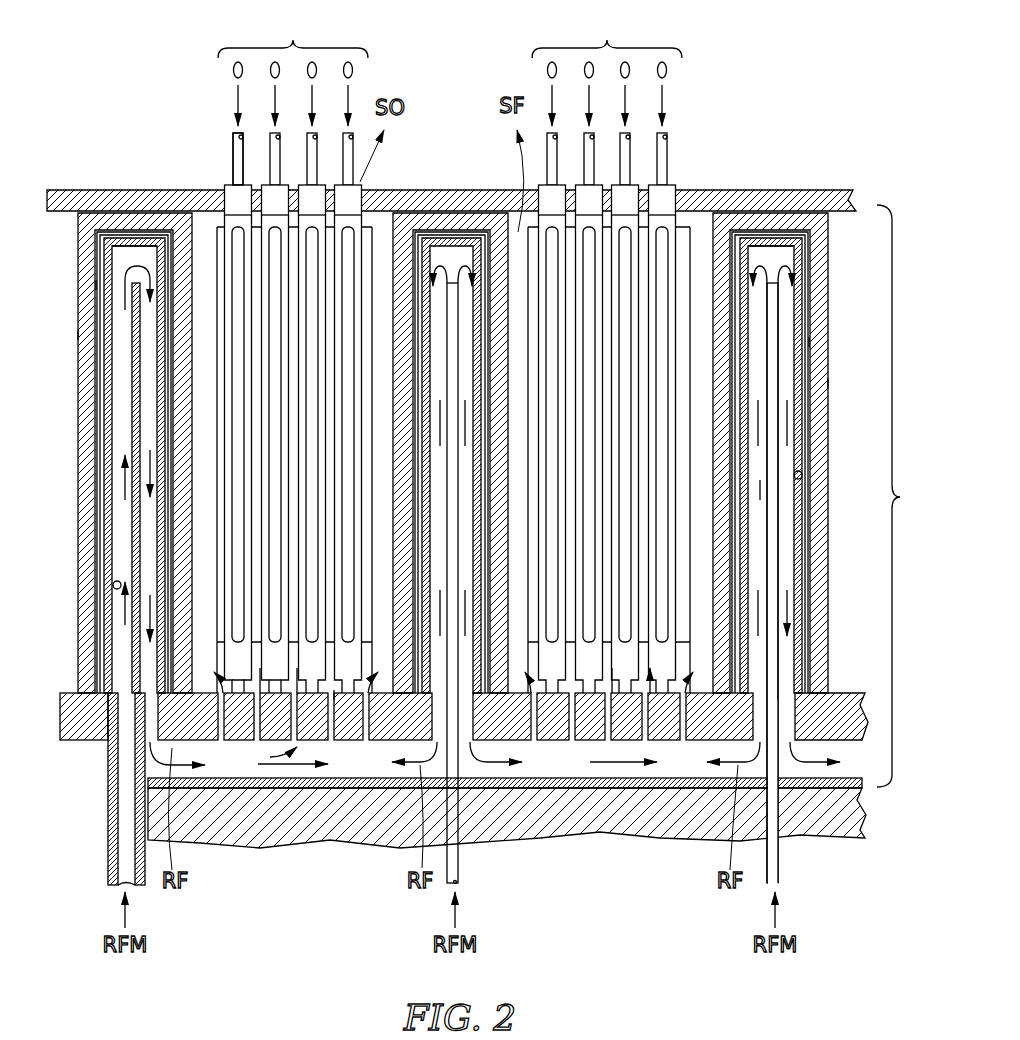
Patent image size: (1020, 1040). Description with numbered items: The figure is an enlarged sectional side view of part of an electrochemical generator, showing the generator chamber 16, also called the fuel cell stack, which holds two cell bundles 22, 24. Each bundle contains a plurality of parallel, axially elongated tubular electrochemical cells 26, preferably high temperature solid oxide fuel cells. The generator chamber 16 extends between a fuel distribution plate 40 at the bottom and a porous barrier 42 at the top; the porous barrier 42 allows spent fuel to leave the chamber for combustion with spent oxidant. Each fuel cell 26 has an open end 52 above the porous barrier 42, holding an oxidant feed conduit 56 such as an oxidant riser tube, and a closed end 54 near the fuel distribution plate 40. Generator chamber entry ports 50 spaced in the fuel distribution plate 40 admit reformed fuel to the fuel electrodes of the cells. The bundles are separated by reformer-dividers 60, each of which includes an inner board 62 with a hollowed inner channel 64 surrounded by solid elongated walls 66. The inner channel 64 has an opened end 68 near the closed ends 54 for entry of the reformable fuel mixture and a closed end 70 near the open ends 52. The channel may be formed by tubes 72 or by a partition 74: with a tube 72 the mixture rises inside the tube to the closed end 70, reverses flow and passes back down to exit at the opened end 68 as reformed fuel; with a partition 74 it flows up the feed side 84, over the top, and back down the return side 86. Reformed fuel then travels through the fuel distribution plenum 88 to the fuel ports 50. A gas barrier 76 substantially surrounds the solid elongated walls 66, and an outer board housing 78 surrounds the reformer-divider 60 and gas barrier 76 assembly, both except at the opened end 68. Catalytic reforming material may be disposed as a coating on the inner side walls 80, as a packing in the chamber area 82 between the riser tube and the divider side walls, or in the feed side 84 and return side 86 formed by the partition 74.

The generator chamber 16 is at (902, 496).
The cell bundle 22 is at (293, 67).
The cell bundle 24 is at (607, 67).
The electrochemical cell 26 is at (220, 228).
The fuel distribution plate 40 is at (350, 727).
The porous barrier 42 is at (62, 190).
The generator chamber entry ports 50 is at (222, 733).
The open end 52 is at (228, 185).
The closed end 54 is at (240, 684).
The oxidant feed conduit 56 is at (235, 133).
The reformer-divider 60 is at (520, 218).
The inner board 62 is at (107, 545).
The hollowed inner channel 64 is at (125, 565).
The solid elongated walls 66 is at (114, 588).
The opened end 68 is at (110, 748).
The closed end 70 is at (110, 252).
The tubes 72 is at (460, 390).
The partition 74 is at (132, 393).
The gas barrier 76 is at (82, 281).
The outer board housing 78 is at (80, 335).
The inner side walls 80 is at (443, 262).
The chamber area 82 is at (760, 492).
The feed side 84 is at (125, 440).
The return side 86 is at (150, 510).
The fuel distribution plenum 88 is at (665, 765).